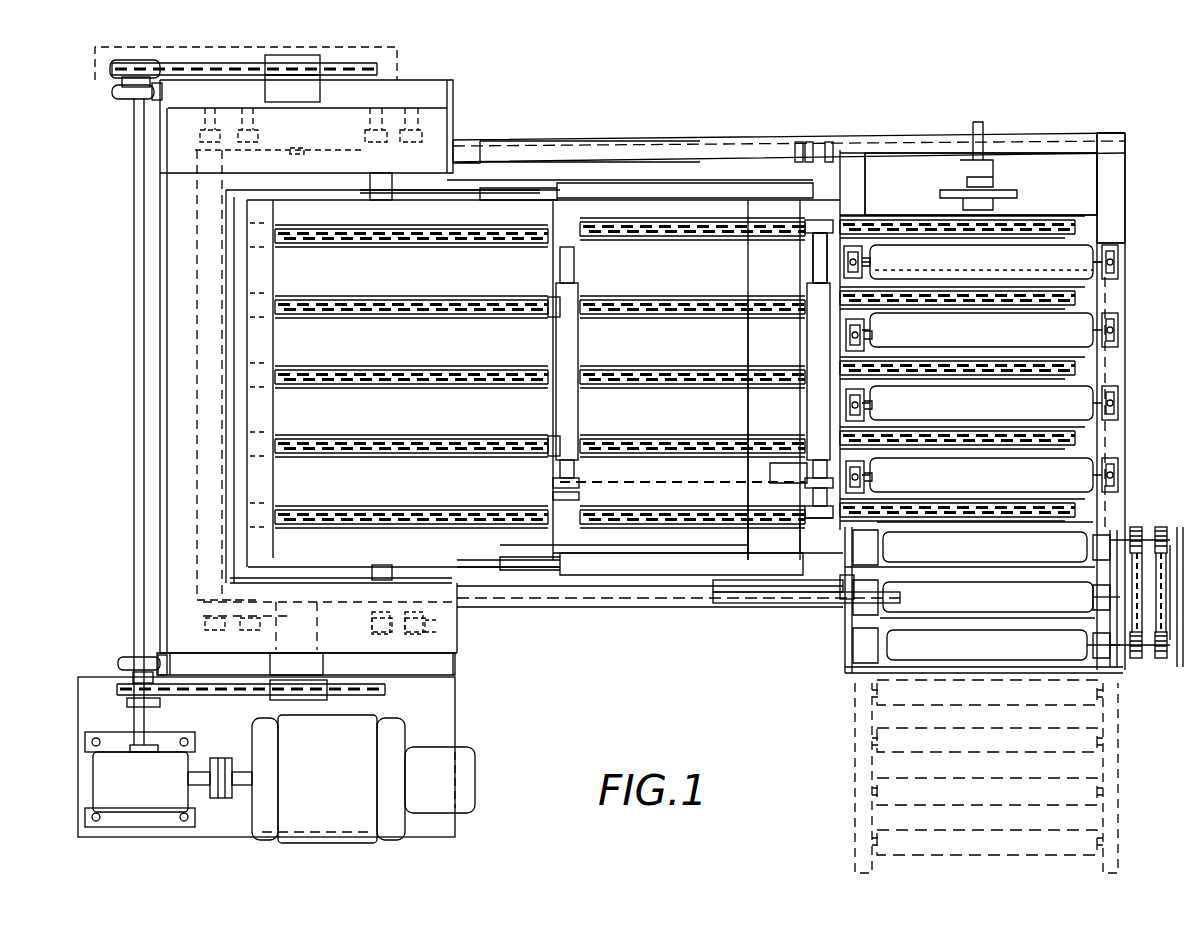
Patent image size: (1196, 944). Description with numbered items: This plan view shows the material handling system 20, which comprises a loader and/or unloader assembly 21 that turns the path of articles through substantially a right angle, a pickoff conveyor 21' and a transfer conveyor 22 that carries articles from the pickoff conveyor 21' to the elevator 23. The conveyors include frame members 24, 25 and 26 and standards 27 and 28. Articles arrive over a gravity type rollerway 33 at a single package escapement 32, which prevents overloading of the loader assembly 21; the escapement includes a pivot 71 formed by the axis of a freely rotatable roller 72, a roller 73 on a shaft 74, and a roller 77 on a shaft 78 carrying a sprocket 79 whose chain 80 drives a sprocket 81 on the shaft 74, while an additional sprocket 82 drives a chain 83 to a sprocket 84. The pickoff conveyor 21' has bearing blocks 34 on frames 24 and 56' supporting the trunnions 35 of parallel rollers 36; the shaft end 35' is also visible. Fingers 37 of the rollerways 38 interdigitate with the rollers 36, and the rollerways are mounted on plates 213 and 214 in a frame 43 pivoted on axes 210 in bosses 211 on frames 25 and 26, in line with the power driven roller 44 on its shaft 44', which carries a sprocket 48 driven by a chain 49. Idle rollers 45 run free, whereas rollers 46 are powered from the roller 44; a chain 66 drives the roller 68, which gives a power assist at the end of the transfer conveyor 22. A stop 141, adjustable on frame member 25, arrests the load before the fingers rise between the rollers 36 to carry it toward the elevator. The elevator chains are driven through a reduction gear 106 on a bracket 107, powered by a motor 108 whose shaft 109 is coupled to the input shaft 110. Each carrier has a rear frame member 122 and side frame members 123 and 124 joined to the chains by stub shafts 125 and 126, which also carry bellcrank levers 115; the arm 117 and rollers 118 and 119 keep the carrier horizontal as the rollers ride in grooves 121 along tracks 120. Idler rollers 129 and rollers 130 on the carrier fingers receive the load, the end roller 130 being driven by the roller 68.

The material handling system 20 is at (610, 622).
The loader and/or unloader assembly 21 is at (1135, 401).
The pickoff conveyor 21' is at (968, 290).
The transfer conveyor 22 is at (622, 138).
The elevator 23 is at (130, 190).
The frame member 24 is at (1114, 148).
The frame member 25 is at (540, 146).
The frame member 26 is at (570, 602).
The standard 27 is at (317, 641).
The standard 28 is at (331, 130).
The single package escapement 32 is at (838, 618).
The gravity type rollerway 33 is at (857, 772).
The bearing block 34 is at (1118, 242).
The trunnion 35 is at (877, 369).
The shaft end 35' is at (1085, 281).
The roller 36 is at (1017, 341).
The finger 37 is at (1005, 270).
The rollerway 38 is at (885, 220).
The frame 43 is at (662, 182).
The power driven roller 44 is at (799, 369).
The shaft 44' is at (799, 258).
The idle roller 45 is at (680, 243).
The power driven roller 46 is at (605, 298).
The sprocket 48 is at (813, 548).
The chain 49 is at (755, 540).
The frame 56' is at (981, 184).
The chain 66 is at (644, 472).
The roller 68 is at (555, 342).
The pivot 71 is at (1085, 596).
The freely rotatable roller 72 is at (921, 607).
The roller 73 is at (917, 655).
The shaft 74 is at (1085, 645).
The roller 77 is at (941, 556).
The shaft 78 is at (1125, 527).
The sprocket 79 is at (1140, 520).
The chain 80 is at (1140, 600).
The sprocket 81 is at (1140, 668).
The sprocket 82 is at (1165, 527).
The chain 83 is at (1166, 600).
The sprocket 84 is at (1160, 665).
The reduction gear 106 is at (118, 783).
The bracket 107 is at (238, 727).
The motor 108 is at (342, 785).
The shaft 109 is at (240, 800).
The input shaft 110 is at (204, 767).
The bellcrank lever 115 is at (408, 612).
The arm 117 is at (440, 620).
The roller 118 is at (375, 612).
The roller 119 is at (440, 634).
The track 120 is at (306, 663).
The groove 121 is at (349, 663).
The rear frame member 122 is at (258, 342).
The side frame member 123 is at (453, 564).
The side frame member 124 is at (440, 190).
The stub shaft 125 is at (387, 581).
The stub shaft 126 is at (380, 200).
The idler roller 129 is at (420, 248).
The roller 130 is at (542, 295).
The stop 141 is at (1010, 185).
The axis 210 is at (848, 142).
The boss 211 is at (812, 142).
The plate 213 is at (905, 280).
The plate 214 is at (752, 344).